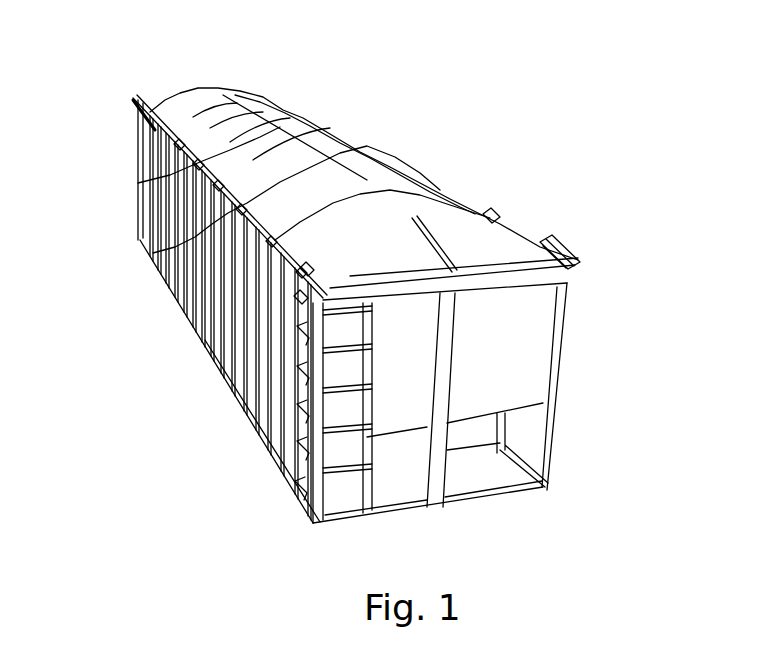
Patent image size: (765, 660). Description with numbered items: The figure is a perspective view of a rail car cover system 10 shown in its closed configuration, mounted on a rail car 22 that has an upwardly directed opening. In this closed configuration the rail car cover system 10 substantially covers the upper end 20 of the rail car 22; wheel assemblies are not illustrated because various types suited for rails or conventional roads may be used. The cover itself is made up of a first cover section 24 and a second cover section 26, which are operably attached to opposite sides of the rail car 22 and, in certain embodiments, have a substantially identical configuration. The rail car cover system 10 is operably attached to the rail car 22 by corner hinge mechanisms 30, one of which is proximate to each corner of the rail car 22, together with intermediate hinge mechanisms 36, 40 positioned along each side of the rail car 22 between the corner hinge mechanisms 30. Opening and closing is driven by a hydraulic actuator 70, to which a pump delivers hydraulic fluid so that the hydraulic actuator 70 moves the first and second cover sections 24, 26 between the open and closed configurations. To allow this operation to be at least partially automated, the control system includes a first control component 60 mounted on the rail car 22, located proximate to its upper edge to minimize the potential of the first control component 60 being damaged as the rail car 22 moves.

The rail car cover system 10 is at (457, 129).
The upper end 20 is at (138, 138).
The rail car 22 is at (213, 333).
The first cover section 24 is at (170, 103).
The second cover section 26 is at (290, 117).
The corner hinge mechanism 30 is at (575, 262).
The intermediate hinge mechanism 36 is at (140, 183).
The intermediate hinge mechanism 40 is at (498, 220).
The first control component 60 is at (160, 263).
The hydraulic actuator 70 is at (560, 247).